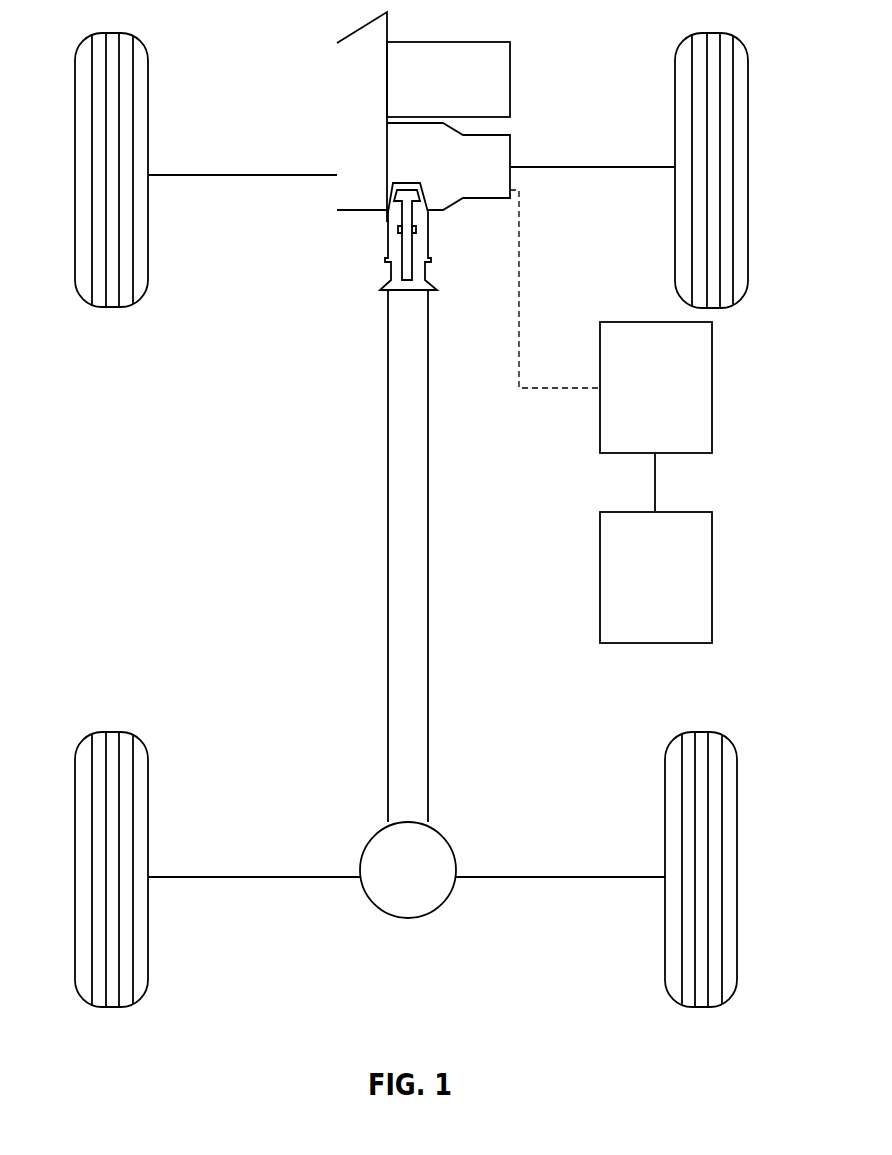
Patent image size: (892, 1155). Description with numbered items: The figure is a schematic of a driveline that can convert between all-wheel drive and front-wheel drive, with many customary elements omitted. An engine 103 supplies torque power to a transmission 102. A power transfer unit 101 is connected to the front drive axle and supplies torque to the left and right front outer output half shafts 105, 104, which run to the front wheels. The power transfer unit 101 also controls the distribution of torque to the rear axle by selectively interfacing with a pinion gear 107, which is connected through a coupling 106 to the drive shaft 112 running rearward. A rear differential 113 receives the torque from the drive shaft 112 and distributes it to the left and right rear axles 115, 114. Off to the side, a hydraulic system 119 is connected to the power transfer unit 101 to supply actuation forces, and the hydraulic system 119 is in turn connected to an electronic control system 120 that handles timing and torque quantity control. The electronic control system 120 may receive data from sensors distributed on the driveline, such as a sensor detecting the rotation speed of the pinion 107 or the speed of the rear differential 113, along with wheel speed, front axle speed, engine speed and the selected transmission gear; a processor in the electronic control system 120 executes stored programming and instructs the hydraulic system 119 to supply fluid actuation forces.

The power transfer unit 101 is at (510, 152).
The transmission 102 is at (348, 36).
The engine 103 is at (443, 41).
The right front outer output half shaft 104 is at (590, 168).
The left front outer output half shaft 105 is at (267, 176).
The coupling 106 is at (390, 284).
The pinion gear 107 is at (398, 236).
The drive shaft 112 is at (388, 500).
The rear differential 113 is at (408, 918).
The right rear axle 114 is at (510, 877).
The left rear axle 115 is at (260, 877).
The hydraulic system 119 is at (712, 388).
The electronic control system 120 is at (712, 578).